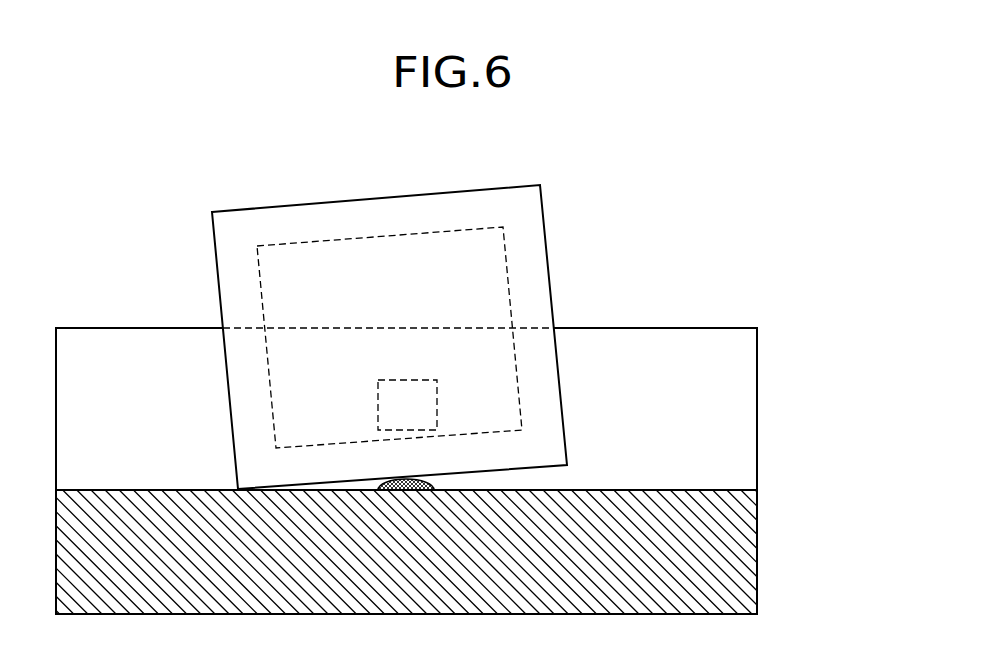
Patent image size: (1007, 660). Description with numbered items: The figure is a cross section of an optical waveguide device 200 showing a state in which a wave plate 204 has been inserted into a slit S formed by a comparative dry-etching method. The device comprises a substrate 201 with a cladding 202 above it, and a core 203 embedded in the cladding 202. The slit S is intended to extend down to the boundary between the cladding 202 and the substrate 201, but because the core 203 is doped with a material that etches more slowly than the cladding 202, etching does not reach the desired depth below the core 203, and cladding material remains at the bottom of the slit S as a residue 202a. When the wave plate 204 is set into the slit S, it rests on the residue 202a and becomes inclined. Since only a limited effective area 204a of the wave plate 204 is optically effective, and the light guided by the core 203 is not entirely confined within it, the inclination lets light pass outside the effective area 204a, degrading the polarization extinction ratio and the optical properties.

The optical waveguide device 200 is at (450, 424).
The substrate 201 is at (757, 547).
The cladding 202 is at (757, 415).
The residue 202a is at (433, 479).
The core 203 is at (407, 380).
The wave plate 204 is at (545, 211).
The effective area 204a is at (368, 237).
The slit S is at (95, 314).